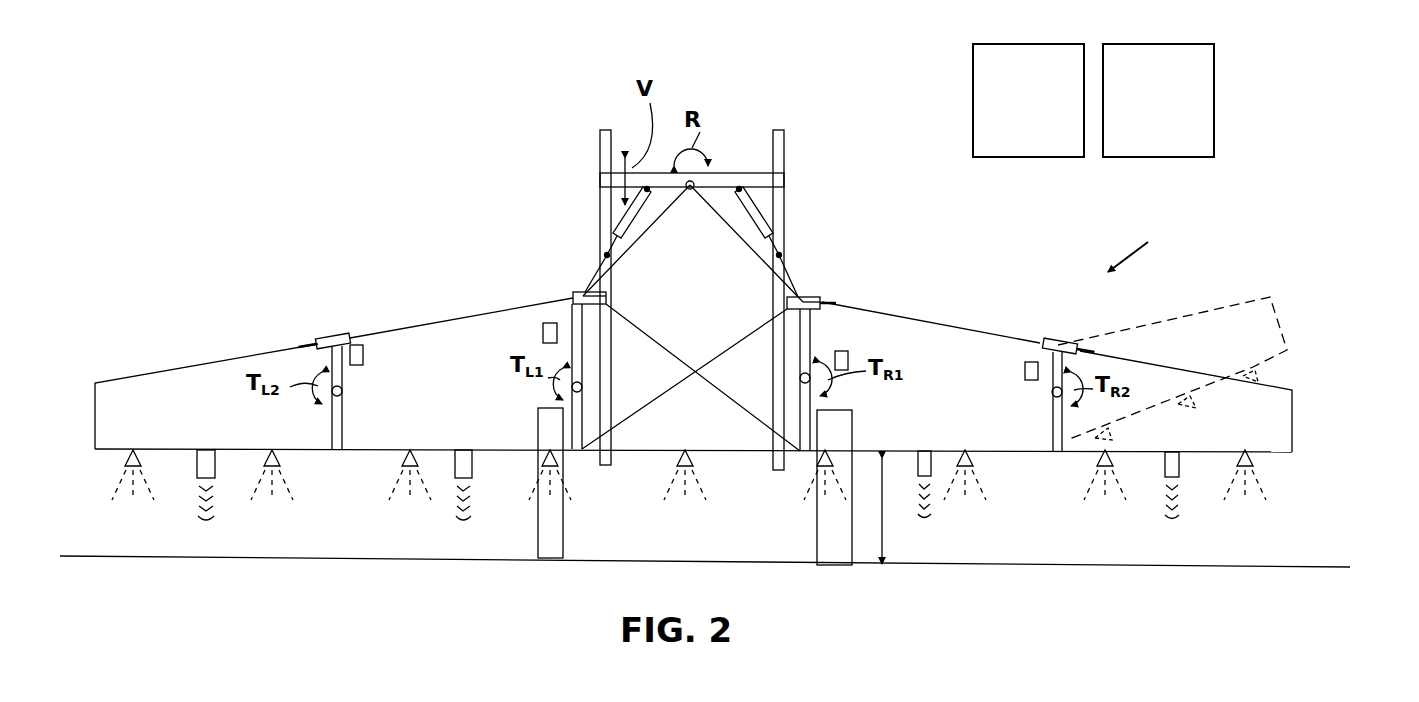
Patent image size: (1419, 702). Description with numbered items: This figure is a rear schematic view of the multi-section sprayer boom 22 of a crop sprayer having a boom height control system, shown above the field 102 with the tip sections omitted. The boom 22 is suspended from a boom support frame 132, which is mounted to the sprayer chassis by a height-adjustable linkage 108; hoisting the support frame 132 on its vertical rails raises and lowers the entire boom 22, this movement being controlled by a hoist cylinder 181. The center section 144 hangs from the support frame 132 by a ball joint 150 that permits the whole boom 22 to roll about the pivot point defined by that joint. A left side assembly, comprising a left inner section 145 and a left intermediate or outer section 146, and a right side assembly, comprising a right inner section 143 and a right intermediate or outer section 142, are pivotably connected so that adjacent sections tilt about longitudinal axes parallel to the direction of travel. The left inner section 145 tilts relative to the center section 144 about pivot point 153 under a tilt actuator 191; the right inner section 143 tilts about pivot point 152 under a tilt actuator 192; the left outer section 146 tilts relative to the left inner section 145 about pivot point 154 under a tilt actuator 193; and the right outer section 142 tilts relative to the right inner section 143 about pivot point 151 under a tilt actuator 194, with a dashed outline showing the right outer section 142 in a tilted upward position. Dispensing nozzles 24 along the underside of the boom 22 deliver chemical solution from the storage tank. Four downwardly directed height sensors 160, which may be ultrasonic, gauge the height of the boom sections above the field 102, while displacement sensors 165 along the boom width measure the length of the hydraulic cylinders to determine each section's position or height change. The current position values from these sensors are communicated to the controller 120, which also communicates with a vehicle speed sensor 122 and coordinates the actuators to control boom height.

The multi-section sprayer boom 22 is at (1132, 243).
The dispensing nozzles 24 is at (125, 456).
The field 102 is at (1340, 567).
The height-adjustable linkage 108 is at (600, 138).
The controller 120 is at (1028, 100).
The vehicle speed sensor 122 is at (1158, 100).
The boom support frame 132 is at (740, 175).
The right intermediate section 142 is at (1296, 414).
The right inner section 143 is at (962, 328).
The center section 144 is at (716, 385).
The left inner section 145 is at (455, 317).
The left intermediate section 146 is at (210, 363).
The ball joint 150 is at (690, 190).
The boom pivot point 151 is at (1052, 392).
The boom pivot point 152 is at (808, 373).
The boom pivot point 153 is at (582, 387).
The boom pivot point 154 is at (342, 391).
The height sensors 160 is at (232, 436).
The displacement sensors 165 is at (356, 345).
The hoist cylinder 181 is at (785, 212).
The tilt actuator 191 is at (590, 292).
The tilt actuator 192 is at (796, 292).
The tilt actuator 193 is at (333, 336).
The tilt actuator 194 is at (1088, 348).